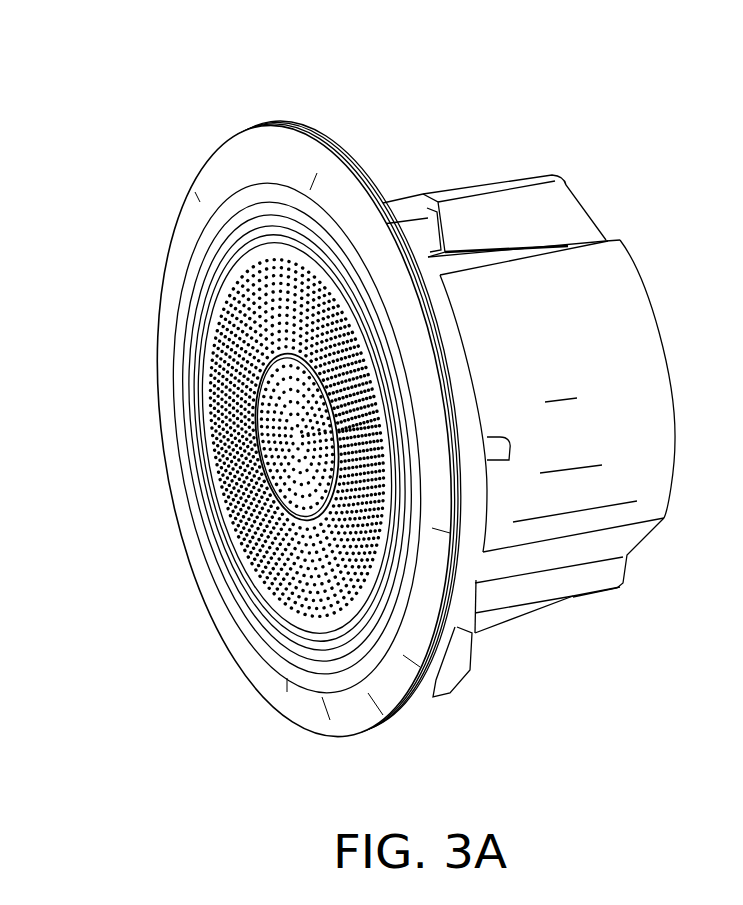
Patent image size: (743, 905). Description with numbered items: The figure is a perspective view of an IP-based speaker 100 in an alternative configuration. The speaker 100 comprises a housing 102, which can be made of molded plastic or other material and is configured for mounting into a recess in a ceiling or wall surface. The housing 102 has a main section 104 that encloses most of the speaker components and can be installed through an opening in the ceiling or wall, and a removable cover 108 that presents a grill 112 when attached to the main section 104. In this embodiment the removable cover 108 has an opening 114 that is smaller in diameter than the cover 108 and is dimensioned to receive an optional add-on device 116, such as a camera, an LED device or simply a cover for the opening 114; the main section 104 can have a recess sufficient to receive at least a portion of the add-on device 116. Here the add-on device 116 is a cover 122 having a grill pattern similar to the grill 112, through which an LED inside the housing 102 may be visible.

The IP-based speaker 100 is at (236, 706).
The housing 102 is at (467, 192).
The main section 104 is at (600, 318).
The removable cover 108 is at (247, 156).
The grill 112 is at (257, 315).
The opening 114 is at (257, 440).
The add-on device 116 is at (206, 503).
The cover 122 is at (287, 497).